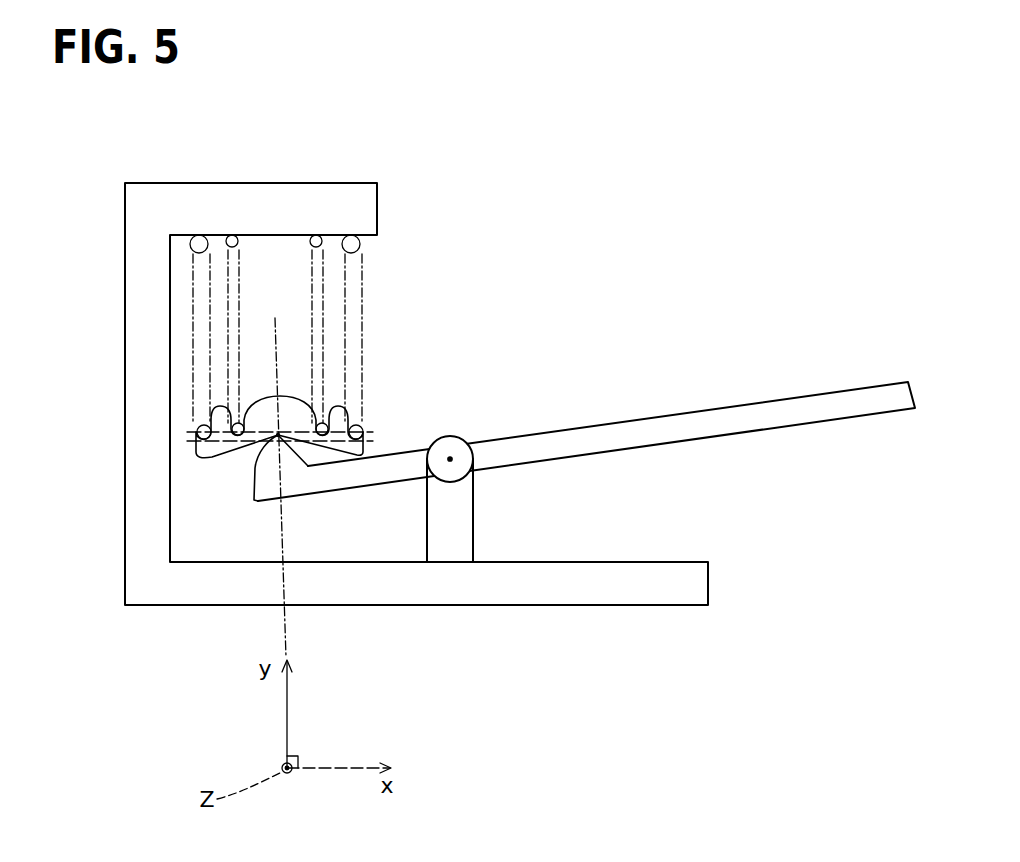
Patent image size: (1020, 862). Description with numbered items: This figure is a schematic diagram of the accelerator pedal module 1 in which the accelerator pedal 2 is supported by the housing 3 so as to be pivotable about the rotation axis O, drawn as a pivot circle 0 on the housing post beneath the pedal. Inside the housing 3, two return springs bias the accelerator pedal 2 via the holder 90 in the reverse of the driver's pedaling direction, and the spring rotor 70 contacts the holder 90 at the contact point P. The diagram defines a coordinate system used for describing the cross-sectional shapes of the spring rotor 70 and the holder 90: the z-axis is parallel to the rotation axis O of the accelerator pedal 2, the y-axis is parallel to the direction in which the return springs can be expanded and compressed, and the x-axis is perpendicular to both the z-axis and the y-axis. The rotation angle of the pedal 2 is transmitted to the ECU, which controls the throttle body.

The accelerator pedal module 1 is at (458, 205).
The accelerator pedal 2 is at (663, 413).
The housing 3 is at (125, 258).
The spring rotor 70 is at (254, 499).
The holder 90 is at (196, 453).
The rotation axis O 0 is at (452, 457).
The contact point P is at (277, 435).